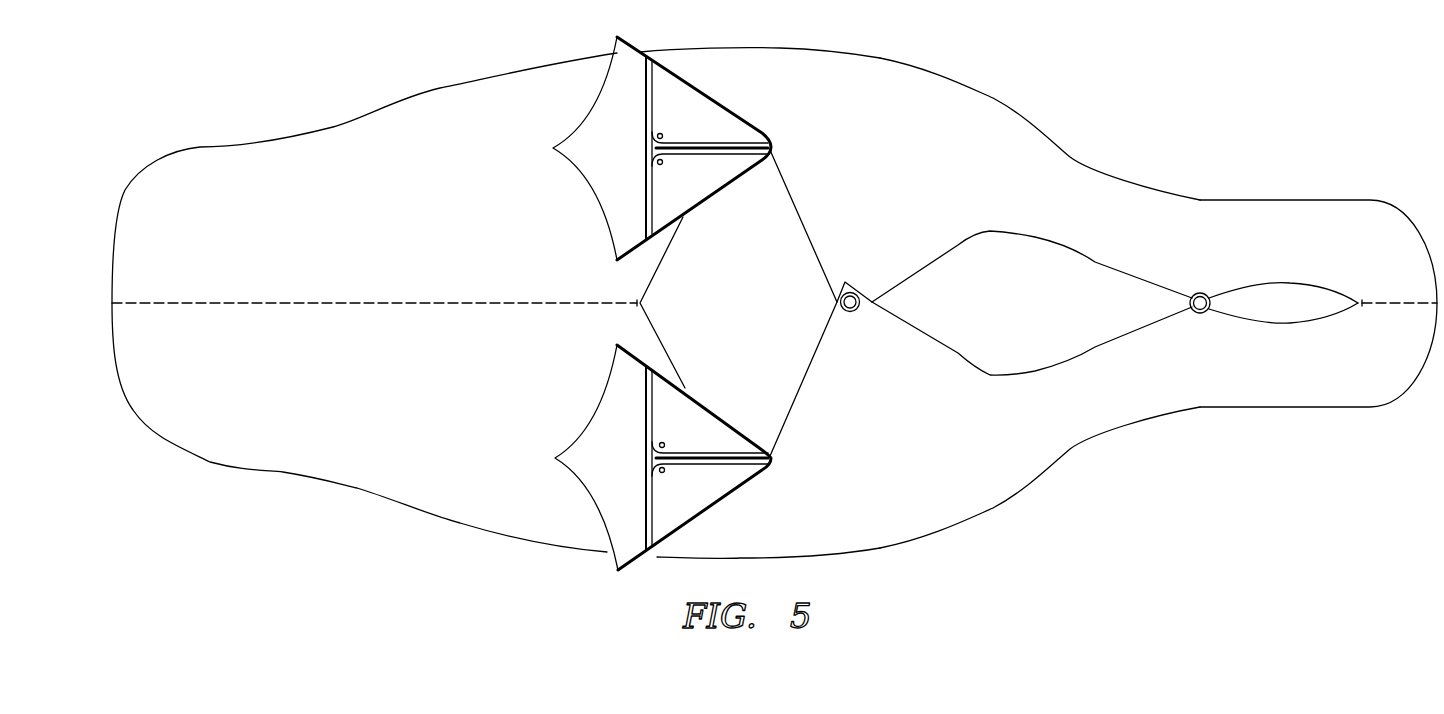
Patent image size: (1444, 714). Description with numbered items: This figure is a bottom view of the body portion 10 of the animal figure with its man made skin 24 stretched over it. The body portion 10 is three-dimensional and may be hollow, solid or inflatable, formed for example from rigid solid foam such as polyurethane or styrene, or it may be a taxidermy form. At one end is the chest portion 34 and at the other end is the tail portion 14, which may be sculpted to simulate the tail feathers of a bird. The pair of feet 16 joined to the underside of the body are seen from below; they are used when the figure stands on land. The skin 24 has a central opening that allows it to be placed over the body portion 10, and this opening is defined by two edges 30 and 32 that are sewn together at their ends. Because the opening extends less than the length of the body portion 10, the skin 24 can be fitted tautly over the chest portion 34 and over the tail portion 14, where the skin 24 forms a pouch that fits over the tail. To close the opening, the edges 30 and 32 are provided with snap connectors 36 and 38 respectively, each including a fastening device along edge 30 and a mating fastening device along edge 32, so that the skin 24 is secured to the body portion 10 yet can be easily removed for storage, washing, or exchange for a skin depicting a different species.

The body portion 10 is at (1021, 327).
The tail portion 14 is at (1308, 225).
The feet 16 is at (618, 85).
The man made skin 24 is at (992, 118).
The edge 30 is at (1140, 278).
The edge 32 is at (1087, 350).
The chest portion 34 is at (380, 237).
The snap connector 36 is at (858, 292).
The snap connector 38 is at (1206, 293).